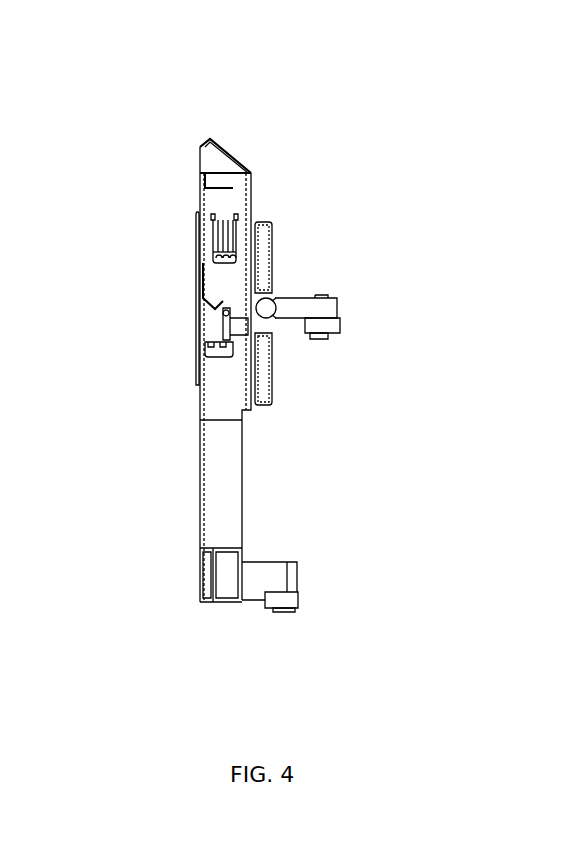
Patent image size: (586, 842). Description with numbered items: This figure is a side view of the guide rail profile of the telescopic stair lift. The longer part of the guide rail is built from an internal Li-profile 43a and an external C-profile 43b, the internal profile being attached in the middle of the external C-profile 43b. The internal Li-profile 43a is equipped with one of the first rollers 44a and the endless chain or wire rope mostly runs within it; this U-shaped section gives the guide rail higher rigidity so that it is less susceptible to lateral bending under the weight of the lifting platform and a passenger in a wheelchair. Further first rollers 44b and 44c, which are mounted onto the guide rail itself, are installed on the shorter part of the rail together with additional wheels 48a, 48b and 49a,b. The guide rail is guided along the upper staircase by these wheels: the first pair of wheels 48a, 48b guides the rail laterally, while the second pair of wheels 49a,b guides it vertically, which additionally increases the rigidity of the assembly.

The internal Li-profile 43a is at (244, 180).
The external C-profile 43b is at (205, 143).
The first roller 44a is at (236, 218).
The first roller 44b is at (203, 263).
The first roller 44c is at (203, 348).
The wheel 48a is at (333, 338).
The wheel 48b is at (305, 602).
The wheels 49a,b is at (347, 323).